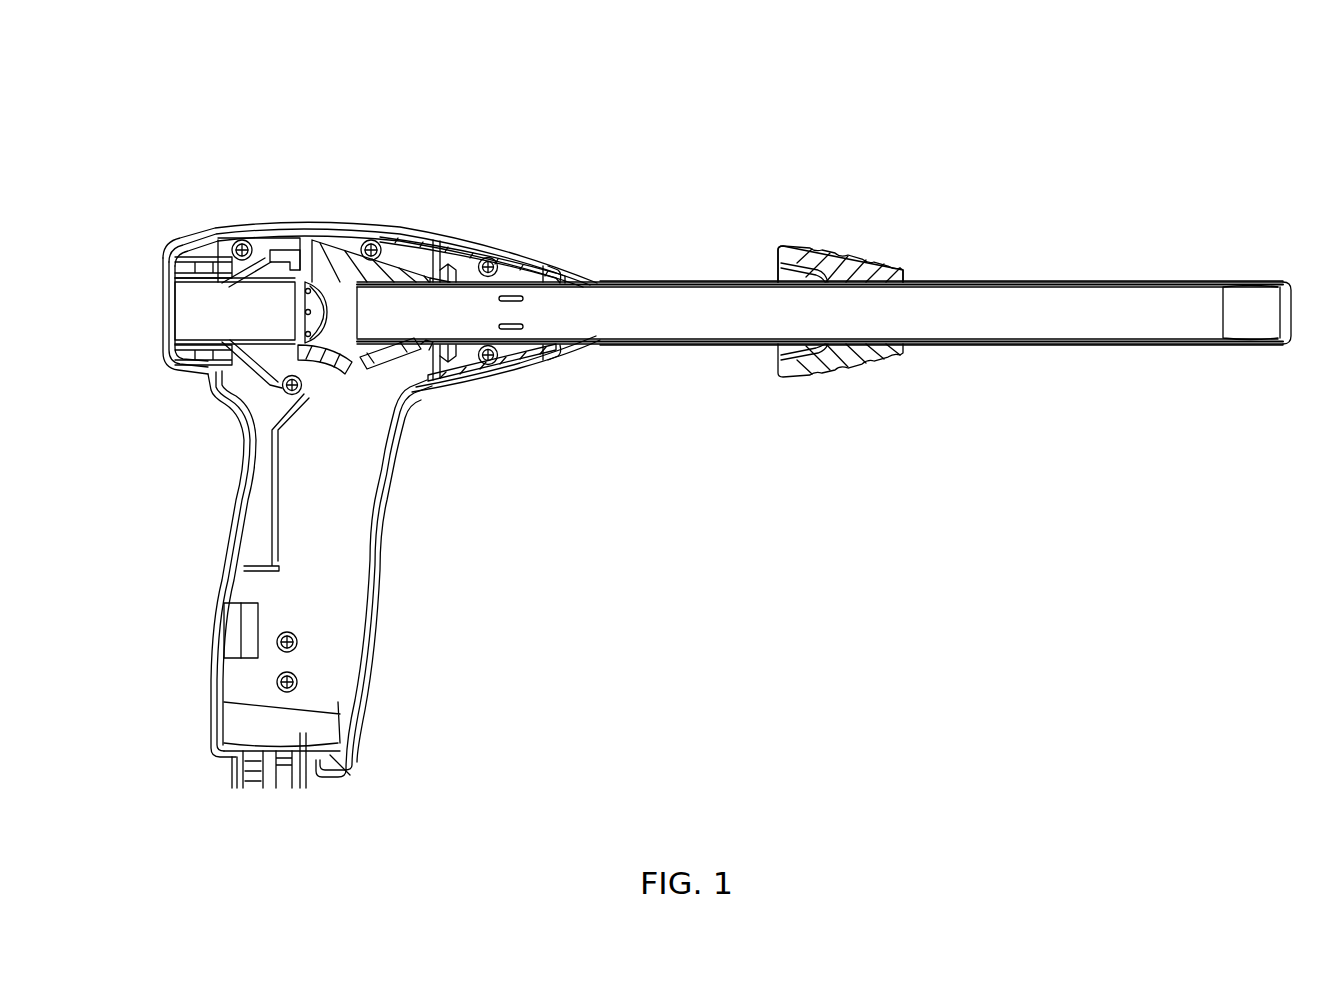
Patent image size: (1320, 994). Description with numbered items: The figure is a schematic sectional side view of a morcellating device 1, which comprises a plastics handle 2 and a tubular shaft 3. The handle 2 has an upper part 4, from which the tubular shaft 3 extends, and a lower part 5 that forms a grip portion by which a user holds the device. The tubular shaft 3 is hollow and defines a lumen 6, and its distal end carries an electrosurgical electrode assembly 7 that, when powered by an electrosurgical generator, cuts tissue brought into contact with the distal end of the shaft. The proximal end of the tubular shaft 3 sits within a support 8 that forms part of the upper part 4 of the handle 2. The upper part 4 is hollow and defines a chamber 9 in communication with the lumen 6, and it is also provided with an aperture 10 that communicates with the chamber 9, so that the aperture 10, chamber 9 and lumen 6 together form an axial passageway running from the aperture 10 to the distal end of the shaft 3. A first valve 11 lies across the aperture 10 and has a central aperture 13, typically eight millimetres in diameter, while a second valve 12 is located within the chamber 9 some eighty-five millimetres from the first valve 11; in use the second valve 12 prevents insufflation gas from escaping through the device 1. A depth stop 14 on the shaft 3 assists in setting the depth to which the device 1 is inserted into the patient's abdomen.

The morcellating device 1 is at (737, 553).
The plastics handle 2 is at (163, 181).
The tubular shaft 3 is at (664, 283).
The upper part 4 is at (403, 229).
The lower part 5 is at (222, 565).
The lumen 6 is at (975, 302).
The electrosurgical electrode assembly 7 is at (1284, 283).
The support 8 is at (350, 260).
The chamber 9 is at (263, 295).
The aperture 10 is at (117, 300).
The first valve 11 is at (163, 300).
The second valve 12 is at (373, 370).
The central aperture 13 is at (163, 323).
The depth stop 14 is at (843, 265).